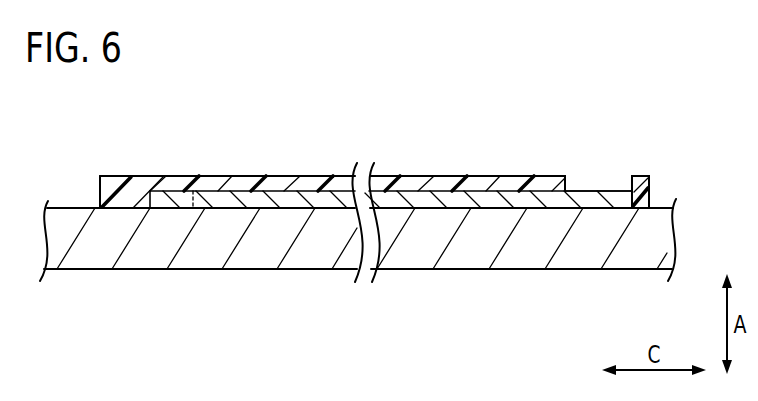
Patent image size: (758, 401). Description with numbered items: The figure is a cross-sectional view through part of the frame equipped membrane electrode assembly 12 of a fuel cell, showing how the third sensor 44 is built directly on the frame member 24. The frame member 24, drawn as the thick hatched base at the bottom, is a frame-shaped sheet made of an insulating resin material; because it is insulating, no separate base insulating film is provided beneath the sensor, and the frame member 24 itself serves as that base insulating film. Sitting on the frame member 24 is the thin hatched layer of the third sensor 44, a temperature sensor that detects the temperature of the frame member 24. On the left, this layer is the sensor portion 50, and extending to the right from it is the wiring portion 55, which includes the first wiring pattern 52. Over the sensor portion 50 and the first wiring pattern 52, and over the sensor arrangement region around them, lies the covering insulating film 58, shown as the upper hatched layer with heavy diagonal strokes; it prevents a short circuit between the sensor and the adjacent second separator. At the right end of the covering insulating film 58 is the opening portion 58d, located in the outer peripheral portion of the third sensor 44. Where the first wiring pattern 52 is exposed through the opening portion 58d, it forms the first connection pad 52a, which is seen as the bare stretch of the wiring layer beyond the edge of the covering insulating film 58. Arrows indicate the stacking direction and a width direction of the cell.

The frame equipped membrane electrode assembly 12 is at (101, 160).
The frame member 24 is at (258, 261).
The third sensor 44 is at (478, 171).
The sensor portion 50 is at (171, 191).
The first wiring pattern 52 is at (308, 197).
The first connection pad 52a is at (592, 190).
The wiring portion 55 is at (216, 172).
The covering insulating film 58 is at (411, 187).
The opening portion 58d is at (575, 183).